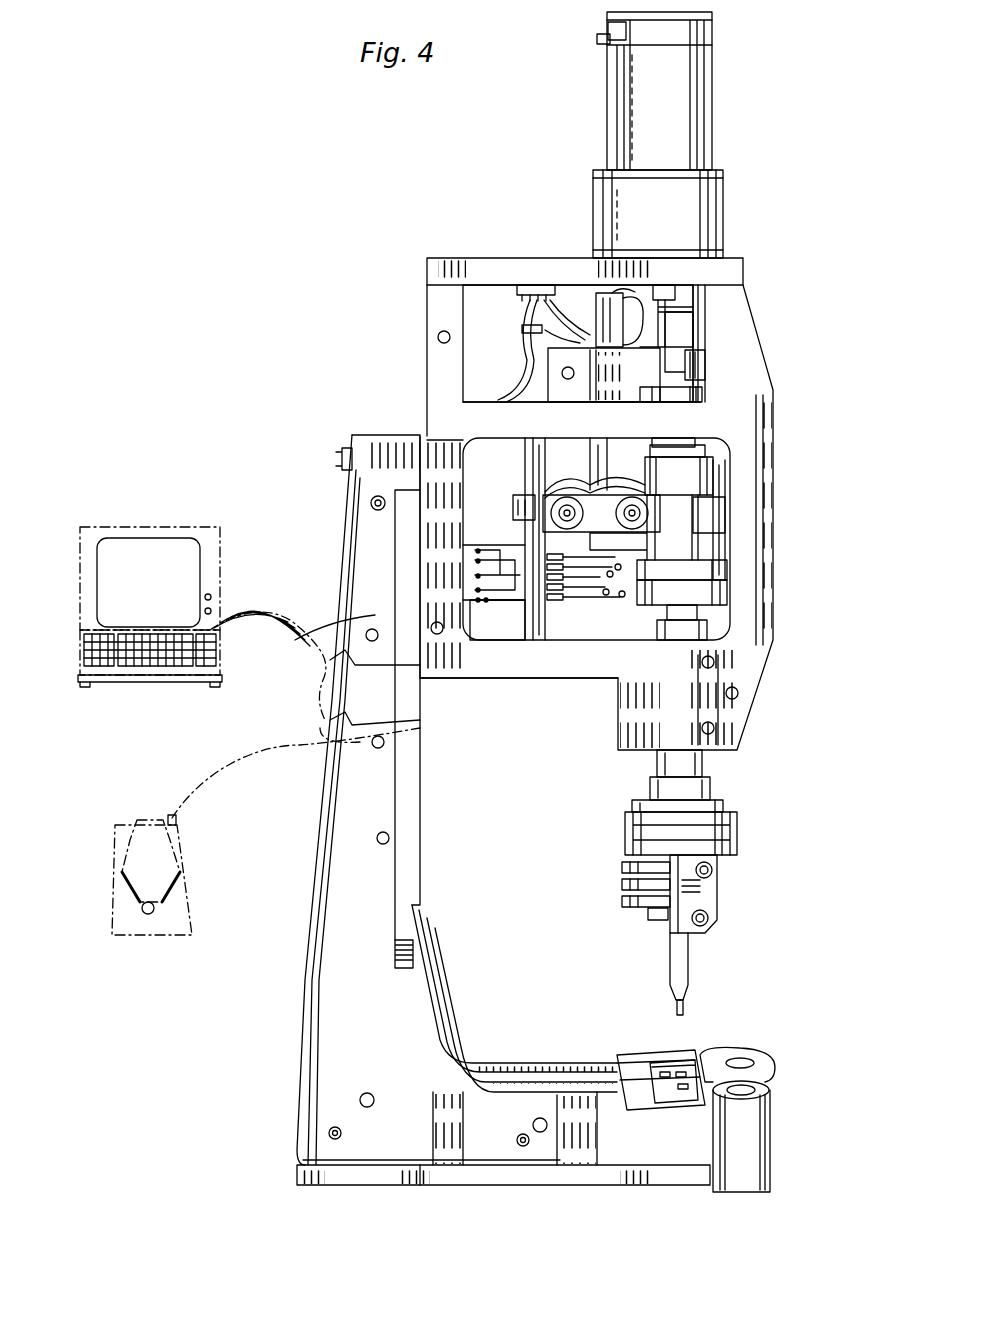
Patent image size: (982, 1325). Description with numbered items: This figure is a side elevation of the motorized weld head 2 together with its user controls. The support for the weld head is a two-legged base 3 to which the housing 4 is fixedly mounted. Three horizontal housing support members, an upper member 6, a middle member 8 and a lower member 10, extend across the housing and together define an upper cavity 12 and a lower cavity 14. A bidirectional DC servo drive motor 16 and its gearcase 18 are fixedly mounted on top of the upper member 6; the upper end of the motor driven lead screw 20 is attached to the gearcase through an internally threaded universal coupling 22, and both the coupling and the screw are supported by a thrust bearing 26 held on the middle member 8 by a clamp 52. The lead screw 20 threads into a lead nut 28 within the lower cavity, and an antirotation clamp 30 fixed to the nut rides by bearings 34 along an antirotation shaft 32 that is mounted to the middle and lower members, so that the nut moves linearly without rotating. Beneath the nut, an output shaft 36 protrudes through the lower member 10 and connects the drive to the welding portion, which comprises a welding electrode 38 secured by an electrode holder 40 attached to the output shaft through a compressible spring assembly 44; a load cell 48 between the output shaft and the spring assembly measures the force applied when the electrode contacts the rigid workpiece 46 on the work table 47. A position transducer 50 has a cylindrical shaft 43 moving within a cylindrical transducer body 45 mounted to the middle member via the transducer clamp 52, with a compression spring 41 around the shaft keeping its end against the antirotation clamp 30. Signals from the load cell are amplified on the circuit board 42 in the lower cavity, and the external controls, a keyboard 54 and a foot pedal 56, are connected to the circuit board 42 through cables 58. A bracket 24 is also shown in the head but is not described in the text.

The motorized weld head 2 is at (798, 248).
The two-legged base 3 is at (345, 880).
The housing 4 is at (463, 480).
The upper member 6 is at (484, 258).
The middle member 8 is at (500, 413).
The lower member 10 is at (493, 690).
The upper cavity 12 is at (496, 355).
The lower cavity 14 is at (513, 530).
The drive motor 16 is at (708, 68).
The gearcase 18 is at (718, 208).
The lead screw 20 is at (700, 445).
The universal coupling 22 is at (705, 325).
The bracket 24 is at (705, 365).
The thrust bearing 26 is at (705, 392).
The lead nut 28 is at (712, 482).
The antirotation clamp 30 is at (725, 520).
The antirotation shaft 32 is at (540, 626).
The bearings 34 is at (513, 510).
The output shaft 36 is at (708, 637).
The welding electrode 38 is at (688, 962).
The electrode holder 40 is at (720, 888).
The compression spring 41 is at (715, 480).
The circuit board 42 is at (480, 565).
The cylindrical shaft 43 is at (590, 482).
The compressible spring assembly 44 is at (700, 787).
The cylindrical transducer body 45 is at (656, 442).
The workpiece 46 is at (665, 1060).
The work table 47 is at (635, 1065).
The load cell 48 is at (720, 600).
The position transducer 50 is at (590, 310).
The transducer clamp 52 is at (578, 400).
The keyboard 54 is at (80, 565).
The foot pedal 56 is at (115, 875).
The cables 58 is at (305, 705).